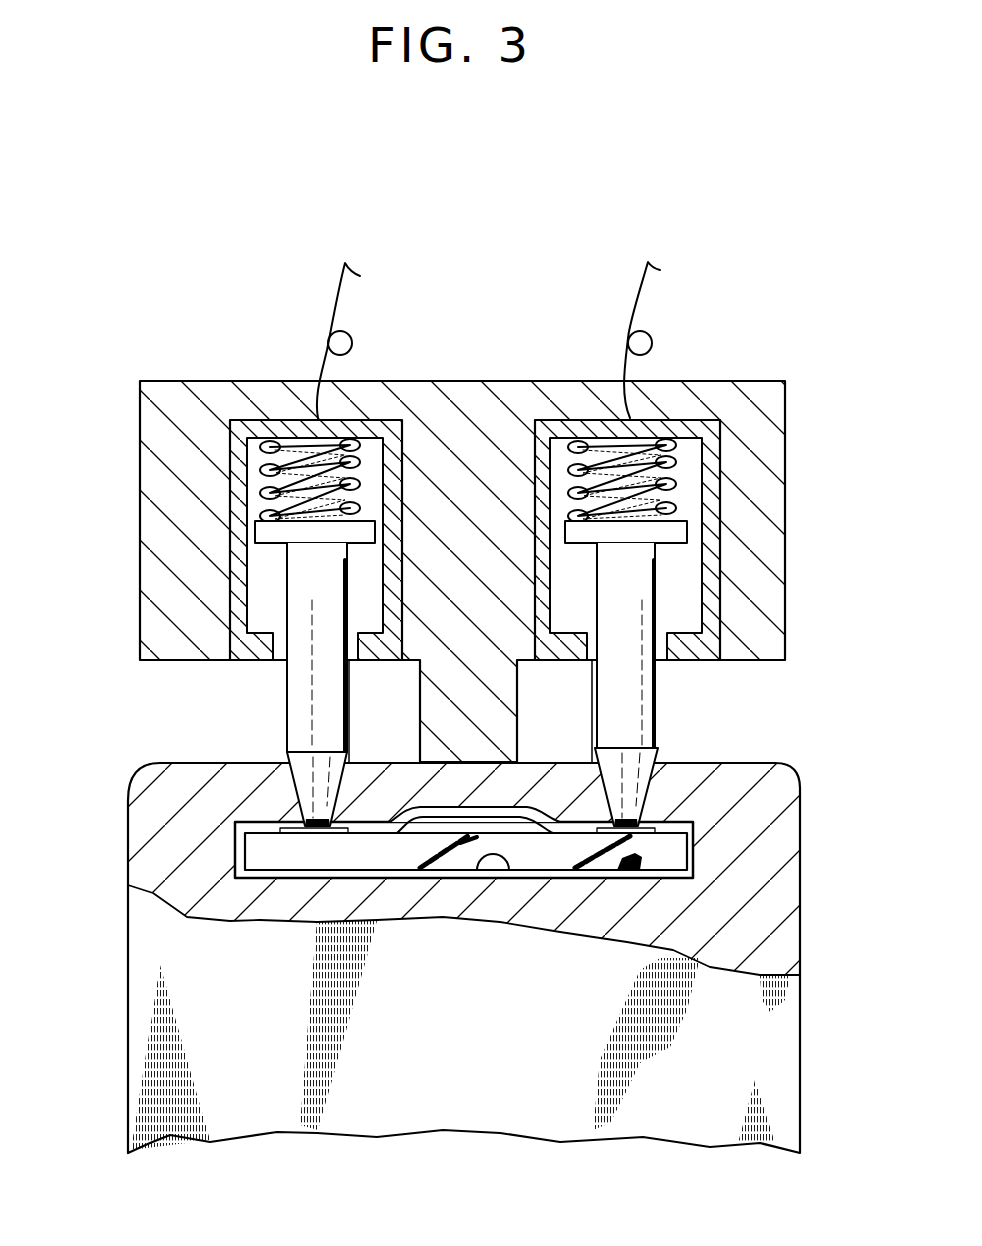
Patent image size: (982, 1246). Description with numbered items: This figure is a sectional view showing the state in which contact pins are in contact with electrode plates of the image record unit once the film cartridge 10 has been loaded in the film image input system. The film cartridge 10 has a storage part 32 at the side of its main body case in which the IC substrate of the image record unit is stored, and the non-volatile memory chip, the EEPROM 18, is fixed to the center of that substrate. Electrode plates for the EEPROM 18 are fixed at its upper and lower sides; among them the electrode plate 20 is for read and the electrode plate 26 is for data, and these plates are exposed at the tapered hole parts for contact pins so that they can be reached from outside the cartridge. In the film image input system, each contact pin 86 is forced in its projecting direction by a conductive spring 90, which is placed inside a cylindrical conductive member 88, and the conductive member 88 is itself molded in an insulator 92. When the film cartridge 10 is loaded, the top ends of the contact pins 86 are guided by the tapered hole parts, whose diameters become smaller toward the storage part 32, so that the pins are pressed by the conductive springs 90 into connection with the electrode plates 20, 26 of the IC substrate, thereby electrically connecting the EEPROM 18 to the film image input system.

The film cartridge 10 is at (803, 1012).
The EEPROM 18 is at (516, 827).
The electrode plate 20 is at (312, 837).
The electrode plate 26 is at (647, 838).
The storage part 32 is at (478, 872).
The contact pin 86 is at (297, 680).
The conductive member 88 is at (232, 596).
The conductive spring 90 is at (267, 437).
The insulator 92 is at (786, 473).